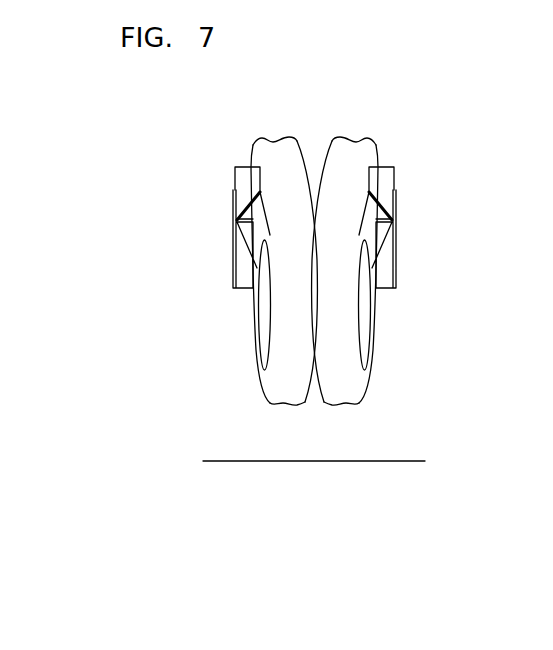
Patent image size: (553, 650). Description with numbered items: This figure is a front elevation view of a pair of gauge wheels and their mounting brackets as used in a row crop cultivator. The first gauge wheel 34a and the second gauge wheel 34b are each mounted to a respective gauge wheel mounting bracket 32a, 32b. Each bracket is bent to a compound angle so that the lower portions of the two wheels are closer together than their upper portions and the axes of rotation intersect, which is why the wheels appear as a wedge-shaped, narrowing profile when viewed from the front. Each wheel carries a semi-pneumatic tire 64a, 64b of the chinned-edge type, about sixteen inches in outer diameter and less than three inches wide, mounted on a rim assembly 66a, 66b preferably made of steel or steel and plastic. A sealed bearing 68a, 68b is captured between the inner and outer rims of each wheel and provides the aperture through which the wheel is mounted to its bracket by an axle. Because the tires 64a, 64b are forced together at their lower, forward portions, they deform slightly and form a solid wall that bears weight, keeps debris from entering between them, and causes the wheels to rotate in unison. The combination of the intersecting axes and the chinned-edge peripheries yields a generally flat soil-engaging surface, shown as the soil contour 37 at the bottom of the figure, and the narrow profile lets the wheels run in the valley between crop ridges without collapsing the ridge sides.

The gauge wheel mounting bracket 32a is at (398, 248).
The gauge wheel mounting bracket 32b is at (233, 248).
The gauge wheel 34a is at (375, 350).
The gauge wheel 34b is at (254, 350).
The tire 64a is at (357, 400).
The tire 64b is at (273, 401).
The rim assembly 66a is at (376, 320).
The rim assembly 66b is at (256, 320).
The sealed bearing 68a is at (378, 289).
The sealed bearing 68b is at (250, 290).
The soil contour 37 is at (315, 461).